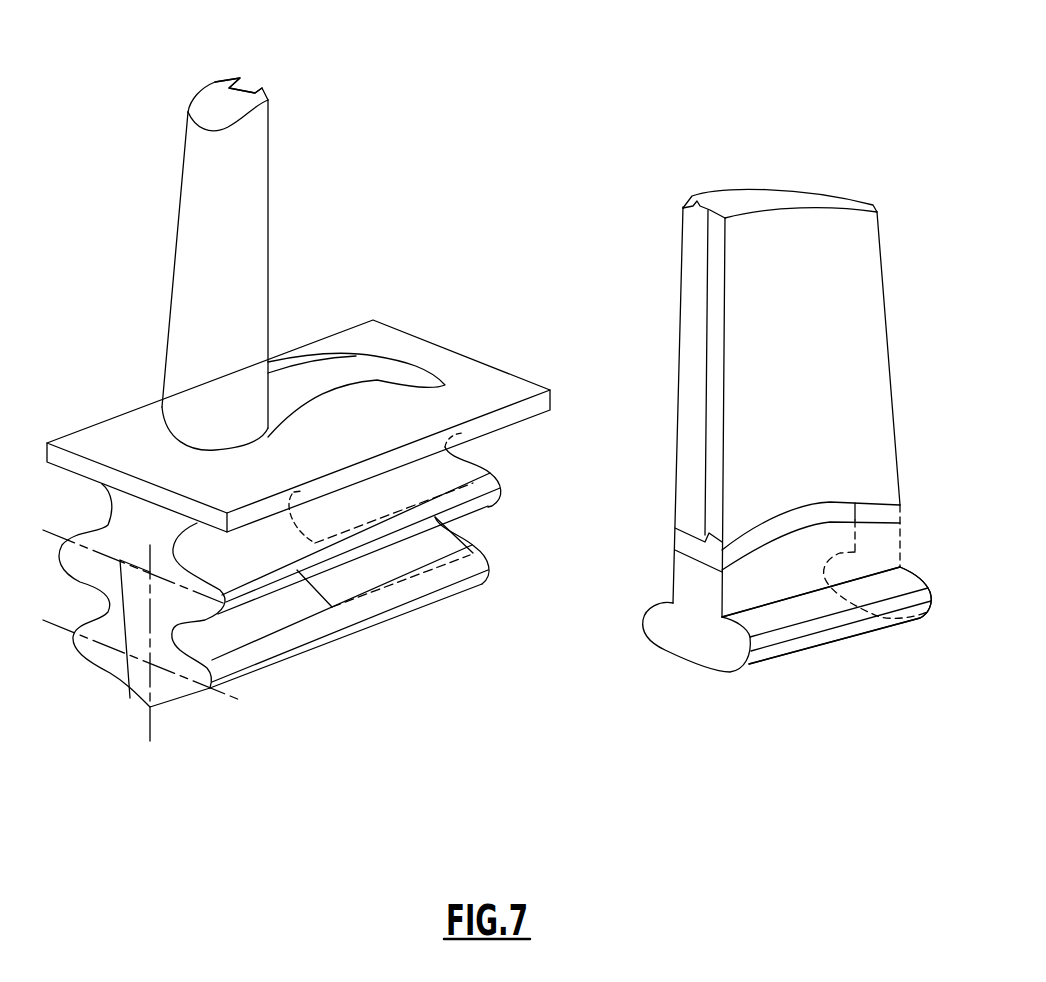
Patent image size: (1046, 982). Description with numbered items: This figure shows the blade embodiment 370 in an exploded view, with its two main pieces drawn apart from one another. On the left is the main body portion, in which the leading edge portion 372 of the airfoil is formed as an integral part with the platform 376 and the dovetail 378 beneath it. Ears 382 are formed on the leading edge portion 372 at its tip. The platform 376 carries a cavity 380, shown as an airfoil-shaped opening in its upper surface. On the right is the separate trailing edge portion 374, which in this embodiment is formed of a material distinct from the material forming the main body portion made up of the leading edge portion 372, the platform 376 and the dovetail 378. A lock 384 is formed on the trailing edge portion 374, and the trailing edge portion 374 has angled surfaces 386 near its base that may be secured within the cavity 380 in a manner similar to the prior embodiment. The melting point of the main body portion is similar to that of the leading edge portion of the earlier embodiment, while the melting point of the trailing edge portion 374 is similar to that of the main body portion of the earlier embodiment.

The embodiment 370 is at (393, 88).
The leading edge portion 372 is at (207, 110).
The trailing edge portion 374 is at (843, 253).
The platform 376 is at (100, 440).
The dovetail 378 is at (128, 698).
The cavity 380 is at (383, 370).
The ears 382 is at (227, 77).
The lock 384 is at (683, 221).
The angled surfaces 386 is at (768, 617).